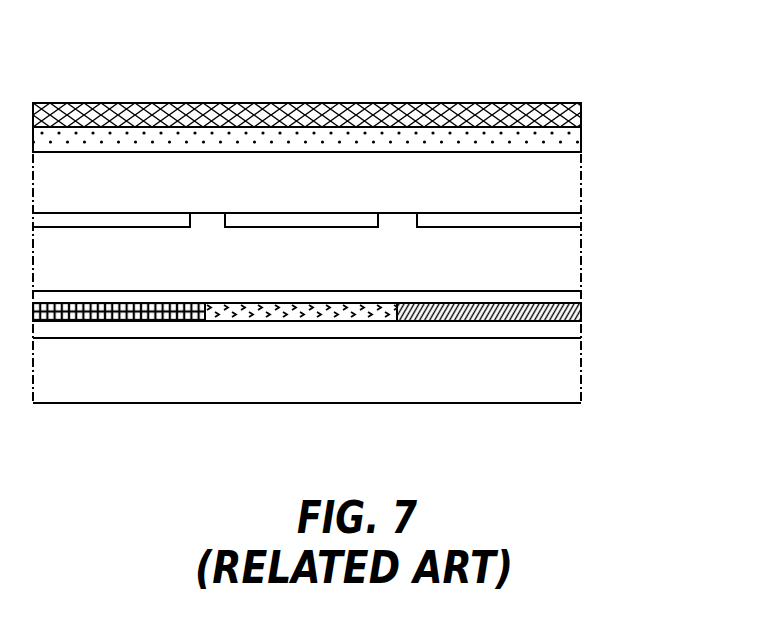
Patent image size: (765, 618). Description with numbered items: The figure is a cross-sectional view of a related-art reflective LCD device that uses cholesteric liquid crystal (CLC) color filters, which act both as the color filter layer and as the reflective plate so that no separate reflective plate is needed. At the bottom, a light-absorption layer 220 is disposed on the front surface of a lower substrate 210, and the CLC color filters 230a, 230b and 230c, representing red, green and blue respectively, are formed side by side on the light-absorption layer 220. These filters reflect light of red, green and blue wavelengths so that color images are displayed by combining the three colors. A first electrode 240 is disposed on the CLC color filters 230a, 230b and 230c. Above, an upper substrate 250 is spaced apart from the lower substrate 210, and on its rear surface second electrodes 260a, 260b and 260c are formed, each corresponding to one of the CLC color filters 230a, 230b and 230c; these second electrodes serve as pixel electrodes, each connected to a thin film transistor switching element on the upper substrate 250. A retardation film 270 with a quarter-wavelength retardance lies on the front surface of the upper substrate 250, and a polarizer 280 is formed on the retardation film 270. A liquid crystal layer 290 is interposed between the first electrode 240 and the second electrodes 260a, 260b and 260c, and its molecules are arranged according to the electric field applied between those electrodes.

The lower substrate 210 is at (566, 376).
The light-absorption layer 220 is at (568, 334).
The CLC color filter 230a is at (88, 321).
The CLC color filter 230b is at (293, 321).
The CLC color filter 230c is at (482, 321).
The first electrode 240 is at (560, 300).
The upper substrate 250 is at (556, 185).
The second electrode 260a is at (108, 218).
The second electrode 260b is at (302, 222).
The second electrode 260c is at (506, 221).
The retardation film 270 is at (566, 145).
The polarizer 280 is at (582, 116).
The liquid crystal layer 290 is at (557, 261).